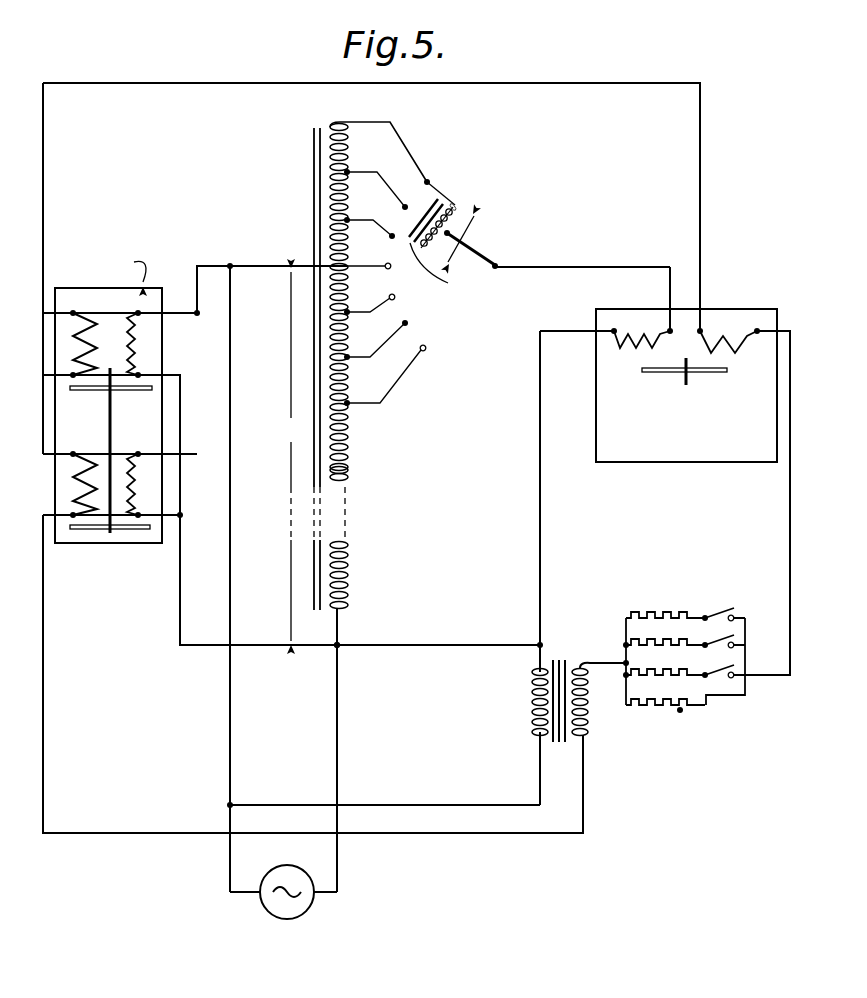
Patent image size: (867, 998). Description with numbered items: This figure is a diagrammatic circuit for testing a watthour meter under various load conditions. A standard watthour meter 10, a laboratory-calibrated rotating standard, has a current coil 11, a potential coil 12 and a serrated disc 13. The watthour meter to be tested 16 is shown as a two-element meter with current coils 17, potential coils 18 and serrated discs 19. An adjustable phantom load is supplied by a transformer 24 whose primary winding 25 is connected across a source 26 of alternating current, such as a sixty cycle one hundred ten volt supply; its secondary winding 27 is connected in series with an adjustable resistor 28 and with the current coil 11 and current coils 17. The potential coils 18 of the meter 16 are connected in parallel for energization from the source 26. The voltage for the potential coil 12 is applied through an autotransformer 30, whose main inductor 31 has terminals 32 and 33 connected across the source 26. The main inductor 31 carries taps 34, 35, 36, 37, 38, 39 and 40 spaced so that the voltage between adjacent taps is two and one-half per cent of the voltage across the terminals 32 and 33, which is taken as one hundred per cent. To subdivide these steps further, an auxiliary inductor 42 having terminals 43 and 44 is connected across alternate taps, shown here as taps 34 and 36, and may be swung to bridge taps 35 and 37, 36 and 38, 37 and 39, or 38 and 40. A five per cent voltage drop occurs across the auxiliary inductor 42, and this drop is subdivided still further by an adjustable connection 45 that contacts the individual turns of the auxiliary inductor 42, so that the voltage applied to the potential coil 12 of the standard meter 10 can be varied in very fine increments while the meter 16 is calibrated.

The standard watthour meter 10 is at (740, 298).
The current coil 11 is at (734, 355).
The potential coil 12 is at (639, 351).
The serrated disc 13 is at (712, 372).
The watthour meter to be tested 16 is at (114, 554).
The current coils 17 is at (70, 352).
The potential coils 18 is at (130, 343).
The serrated discs 19 is at (135, 392).
The transformer 24 is at (568, 640).
The primary winding 25 is at (530, 697).
The source of alternating current 26 is at (298, 918).
The secondary winding 27 is at (588, 714).
The adjustable resistor 28 is at (672, 612).
The autotransformer 30 is at (288, 204).
The main inductor 31 is at (348, 470).
The terminal 32 is at (345, 262).
The terminal 33 is at (340, 643).
The tap 34 is at (436, 183).
The tap 35 is at (407, 203).
The tap 36 is at (377, 198).
The tap 37 is at (391, 268).
The tap 38 is at (395, 299).
The tap 39 is at (406, 324).
The tap 40 is at (424, 351).
The auxiliary inductor 42 is at (460, 208).
The terminal 43 is at (446, 203).
The terminal 44 is at (441, 274).
The adjustable connection 45 is at (452, 240).